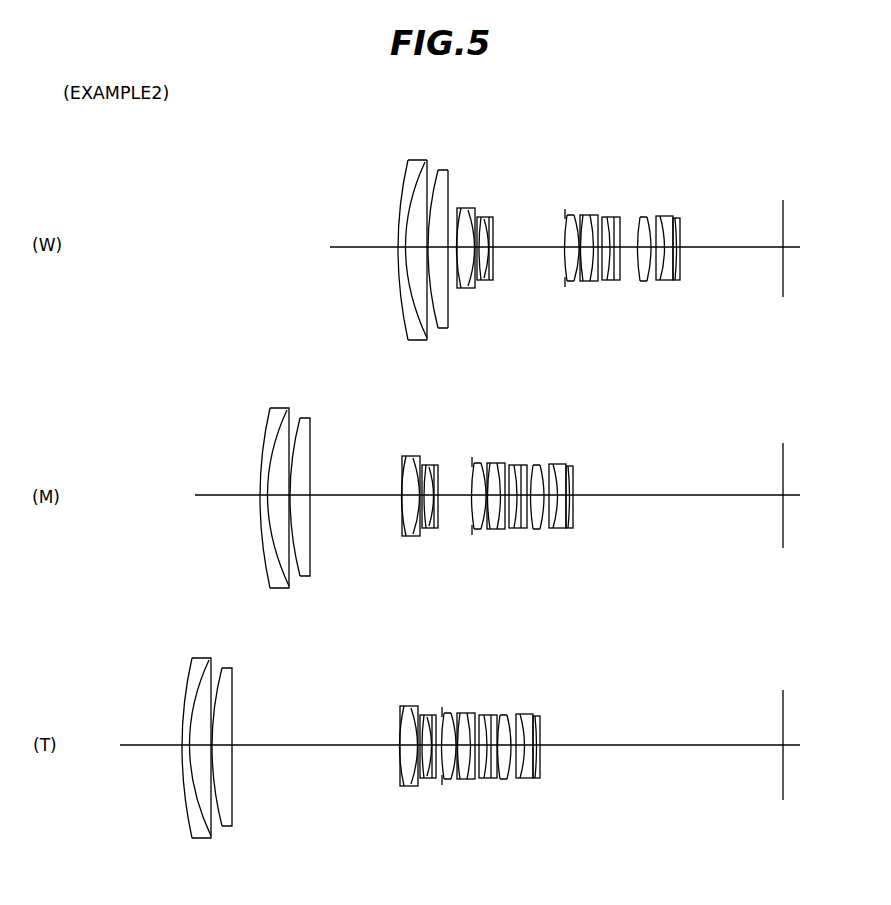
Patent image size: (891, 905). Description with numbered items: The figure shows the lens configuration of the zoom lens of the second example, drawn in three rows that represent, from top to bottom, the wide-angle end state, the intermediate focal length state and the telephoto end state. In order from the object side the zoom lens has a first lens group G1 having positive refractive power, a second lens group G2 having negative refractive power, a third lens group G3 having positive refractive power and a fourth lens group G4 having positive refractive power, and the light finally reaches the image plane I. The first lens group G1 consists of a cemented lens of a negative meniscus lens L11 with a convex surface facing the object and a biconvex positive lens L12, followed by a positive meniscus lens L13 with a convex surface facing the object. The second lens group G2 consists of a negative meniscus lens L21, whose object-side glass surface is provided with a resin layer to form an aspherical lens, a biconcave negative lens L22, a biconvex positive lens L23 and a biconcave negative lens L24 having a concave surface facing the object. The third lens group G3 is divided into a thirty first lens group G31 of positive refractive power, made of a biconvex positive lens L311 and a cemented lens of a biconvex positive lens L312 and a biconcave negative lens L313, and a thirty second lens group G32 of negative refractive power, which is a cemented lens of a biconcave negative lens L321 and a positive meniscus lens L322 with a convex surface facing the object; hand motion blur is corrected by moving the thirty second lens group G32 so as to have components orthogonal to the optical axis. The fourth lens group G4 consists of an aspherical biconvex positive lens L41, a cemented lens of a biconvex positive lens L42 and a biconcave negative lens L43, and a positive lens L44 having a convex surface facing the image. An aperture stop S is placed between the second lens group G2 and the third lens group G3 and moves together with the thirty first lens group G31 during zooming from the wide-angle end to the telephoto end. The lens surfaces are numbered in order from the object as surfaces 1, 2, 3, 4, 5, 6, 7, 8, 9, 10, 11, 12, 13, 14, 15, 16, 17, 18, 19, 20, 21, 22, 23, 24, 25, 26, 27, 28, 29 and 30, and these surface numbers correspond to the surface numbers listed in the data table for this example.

The surface 1 is at (407, 158).
The surface 2 is at (414, 160).
The surface 3 is at (422, 160).
The surface 4 is at (437, 170).
The surface 5 is at (443, 170).
The surface 6 is at (448, 171).
The surface 7 is at (452, 175).
The surface 8 is at (457, 207).
The surface 9 is at (474, 212).
The surface 10 is at (482, 215).
The surface 11 is at (486, 217).
The surface 12 is at (490, 218).
The surface 13 is at (494, 219).
The surface 14 is at (497, 222).
The surface 15 is at (566, 212).
The surface 16 is at (577, 213).
The surface 17 is at (583, 214).
The surface 18 is at (588, 214).
The surface 19 is at (600, 215).
The surface 20 is at (605, 216).
The surface 21 is at (612, 216).
The surface 22 is at (618, 217).
The surface 23 is at (621, 218).
The surface 24 is at (640, 217).
The surface 25 is at (648, 217).
The surface 26 is at (657, 217).
The surface 27 is at (661, 219).
The surface 28 is at (674, 220).
The surface 29 is at (677, 223).
The surface 30 is at (680, 226).
The negative meniscus lens L11 is at (407, 342).
The biconvex positive lens L12 is at (420, 342).
The positive meniscus lens L13 is at (436, 330).
The negative meniscus lens L21 is at (458, 290).
The biconcave negative lens L22 is at (470, 290).
The biconvex positive lens L23 is at (482, 282).
The biconcave negative lens L24 is at (491, 282).
The biconvex positive lens L311 is at (567, 283).
The biconvex positive lens L312 is at (580, 283).
The biconcave negative lens L313 is at (593, 283).
The biconcave negative lens L321 is at (604, 282).
The positive meniscus lens L322 is at (618, 282).
The biconvex positive lens L41 is at (652, 283).
The biconvex positive lens L42 is at (662, 283).
The biconcave negative lens L43 is at (672, 283).
The positive lens L44 is at (679, 283).
The first lens group G1 is at (293, 377).
The second lens group G2 is at (389, 377).
The third lens group G3 is at (505, 353).
The thirty first lens group G31 is at (505, 331).
The thirty second lens group G32 is at (690, 331).
The fourth lens group G4 is at (820, 355).
The aperture stop S is at (565, 282).
The image plane I is at (783, 290).